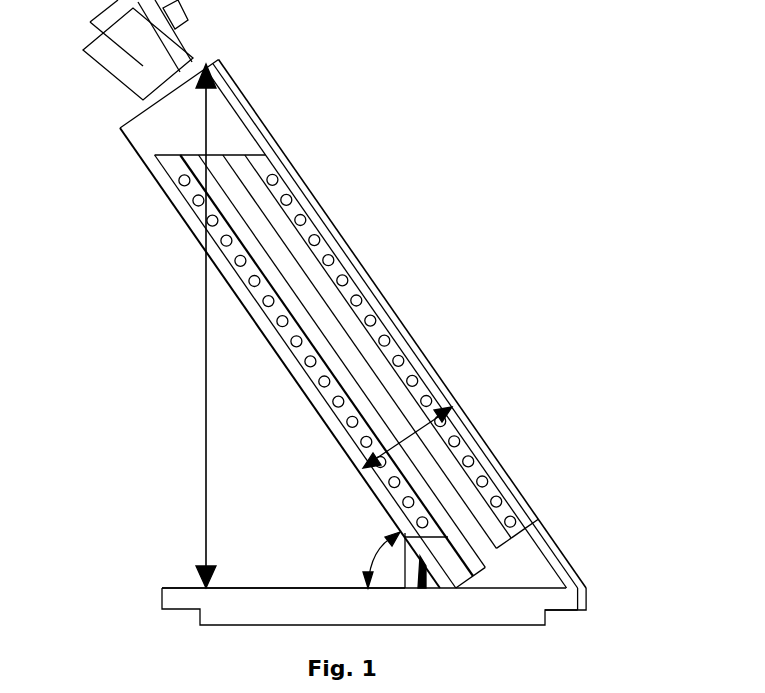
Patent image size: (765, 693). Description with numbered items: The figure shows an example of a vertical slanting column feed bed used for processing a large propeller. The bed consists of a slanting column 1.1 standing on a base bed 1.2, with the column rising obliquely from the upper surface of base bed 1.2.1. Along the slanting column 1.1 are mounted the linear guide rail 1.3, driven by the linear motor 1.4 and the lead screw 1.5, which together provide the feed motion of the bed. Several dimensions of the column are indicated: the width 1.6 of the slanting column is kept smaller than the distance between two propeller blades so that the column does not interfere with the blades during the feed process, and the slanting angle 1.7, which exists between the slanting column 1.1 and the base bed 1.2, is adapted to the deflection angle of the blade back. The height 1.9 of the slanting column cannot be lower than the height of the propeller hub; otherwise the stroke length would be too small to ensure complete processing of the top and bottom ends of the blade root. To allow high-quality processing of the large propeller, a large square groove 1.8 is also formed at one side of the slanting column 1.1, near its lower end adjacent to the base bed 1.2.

The slanting column 1.1 is at (207, 115).
The base bed 1.2 is at (373, 608).
The upper surface of base bed 1.2.1 is at (193, 588).
The linear guide rail 1.3 is at (333, 393).
The linear motor 1.4 is at (128, 48).
The lead screw 1.5 is at (265, 233).
The width of slanting column 1.6 is at (405, 439).
The slanting angle of slanting column 1.7 is at (375, 553).
The large square groove 1.8 is at (528, 578).
The height of slanting column 1.9 is at (200, 388).